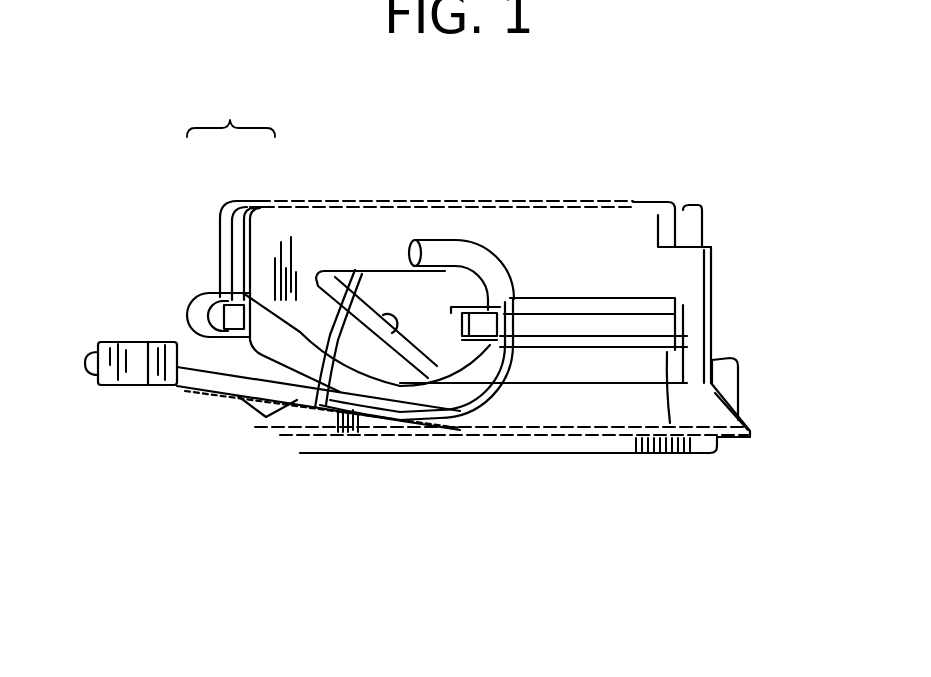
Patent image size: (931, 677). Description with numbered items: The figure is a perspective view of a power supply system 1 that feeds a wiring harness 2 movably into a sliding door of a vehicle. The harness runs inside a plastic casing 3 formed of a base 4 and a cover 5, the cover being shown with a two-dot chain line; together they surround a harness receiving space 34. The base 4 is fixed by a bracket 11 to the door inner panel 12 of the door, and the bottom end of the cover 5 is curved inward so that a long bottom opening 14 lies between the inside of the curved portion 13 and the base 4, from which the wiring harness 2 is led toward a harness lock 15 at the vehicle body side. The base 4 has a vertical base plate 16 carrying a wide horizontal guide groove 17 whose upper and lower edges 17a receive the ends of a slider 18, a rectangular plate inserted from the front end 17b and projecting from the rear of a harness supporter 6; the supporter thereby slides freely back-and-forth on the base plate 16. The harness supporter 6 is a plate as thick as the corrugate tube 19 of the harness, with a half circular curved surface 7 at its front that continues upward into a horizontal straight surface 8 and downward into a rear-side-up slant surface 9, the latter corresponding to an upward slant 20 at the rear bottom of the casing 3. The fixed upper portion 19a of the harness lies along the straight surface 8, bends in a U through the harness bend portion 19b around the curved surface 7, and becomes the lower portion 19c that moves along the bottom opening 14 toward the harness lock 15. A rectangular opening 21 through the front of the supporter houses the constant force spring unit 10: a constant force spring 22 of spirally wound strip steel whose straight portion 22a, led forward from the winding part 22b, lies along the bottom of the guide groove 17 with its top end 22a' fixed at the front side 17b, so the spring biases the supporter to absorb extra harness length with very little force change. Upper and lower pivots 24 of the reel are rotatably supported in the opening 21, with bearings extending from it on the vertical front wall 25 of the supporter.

The power supply system 1 is at (563, 135).
The wiring harness 2 is at (187, 393).
The casing 3 is at (231, 109).
The base 4 is at (222, 214).
The cover 5 is at (312, 202).
The harness supporter 6 is at (372, 262).
The curved surface 7 is at (487, 316).
The straight surface 8 is at (392, 268).
The slant surface 9 is at (368, 300).
The constant force spring unit 10 is at (447, 390).
The bracket 11 is at (197, 297).
The door inner panel 12 is at (177, 226).
The curved portion 13 is at (528, 408).
The bottom opening 14 is at (482, 425).
The harness lock 15 is at (113, 388).
The base plate 16 is at (592, 239).
The guide groove 17 is at (617, 335).
The upper and lower edges 17a is at (690, 320).
The front end 17b is at (688, 350).
The slider 18 is at (443, 335).
The corrugate tube 19 is at (222, 393).
The upper portion 19a is at (447, 264).
The harness bend portion 19b is at (507, 415).
The lower portion 19c is at (290, 404).
The upward slant 20 is at (322, 337).
The rectangular opening 21 is at (413, 330).
The constant force spring 22 is at (440, 345).
The straight portion 22a is at (656, 433).
The top end 22a' is at (711, 431).
The winding part 22b is at (513, 297).
The upper and lower pivots 24 is at (478, 400).
The front wall 25 is at (358, 320).
The harness receiving space 34 is at (647, 268).